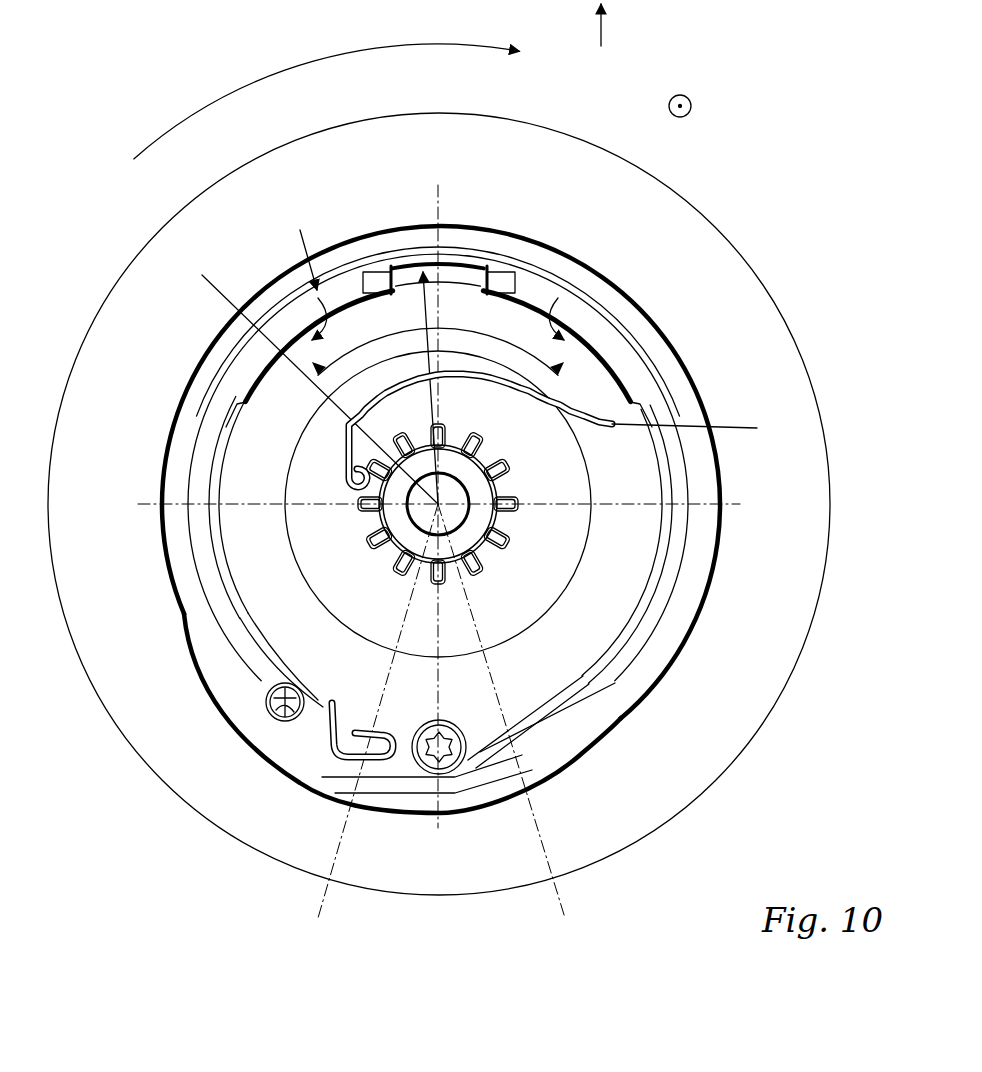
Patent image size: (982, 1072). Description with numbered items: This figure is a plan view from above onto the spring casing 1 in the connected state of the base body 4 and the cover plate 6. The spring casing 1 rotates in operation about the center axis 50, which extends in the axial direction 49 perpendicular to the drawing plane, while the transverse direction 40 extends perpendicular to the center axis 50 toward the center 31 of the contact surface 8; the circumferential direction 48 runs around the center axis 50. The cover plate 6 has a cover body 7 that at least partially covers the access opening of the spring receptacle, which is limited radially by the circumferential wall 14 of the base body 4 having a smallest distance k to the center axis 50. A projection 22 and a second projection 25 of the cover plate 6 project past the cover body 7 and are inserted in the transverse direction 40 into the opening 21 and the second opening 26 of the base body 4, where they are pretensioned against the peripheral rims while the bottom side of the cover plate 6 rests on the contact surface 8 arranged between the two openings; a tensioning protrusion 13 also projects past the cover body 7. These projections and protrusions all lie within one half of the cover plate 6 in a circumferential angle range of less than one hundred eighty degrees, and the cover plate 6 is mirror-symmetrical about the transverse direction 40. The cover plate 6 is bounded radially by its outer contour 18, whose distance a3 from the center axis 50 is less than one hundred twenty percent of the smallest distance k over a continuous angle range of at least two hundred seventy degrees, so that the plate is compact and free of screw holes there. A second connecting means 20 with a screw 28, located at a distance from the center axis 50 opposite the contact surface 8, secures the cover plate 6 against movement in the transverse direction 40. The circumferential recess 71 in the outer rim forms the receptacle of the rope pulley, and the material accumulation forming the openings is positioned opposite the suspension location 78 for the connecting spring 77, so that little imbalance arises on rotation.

The spring casing 1 is at (108, 235).
The base body 4 is at (680, 380).
The cover plate 6 is at (632, 537).
The cover body 7 is at (512, 330).
The contact surface 8 is at (428, 258).
The tensioning protrusion 13 is at (465, 270).
The circumferential wall 14 is at (375, 278).
The outer contour 18 is at (592, 689).
The second connecting means 20 is at (418, 778).
The opening 21 is at (360, 322).
The projection 22 is at (300, 322).
The second projection 25 is at (438, 504).
The second opening 26 is at (575, 288).
The screw 28 is at (449, 758).
The center 31 is at (442, 262).
The transverse direction 40 is at (604, 30).
The circumferential direction 48 is at (305, 63).
The axial direction 49 is at (692, 99).
The center axis 50 is at (446, 509).
The circumferential recess 71 is at (176, 604).
The connecting spring 77 is at (348, 437).
The suspension location 78 is at (332, 734).
The distance a3 is at (420, 328).
The smallest distance k is at (692, 433).